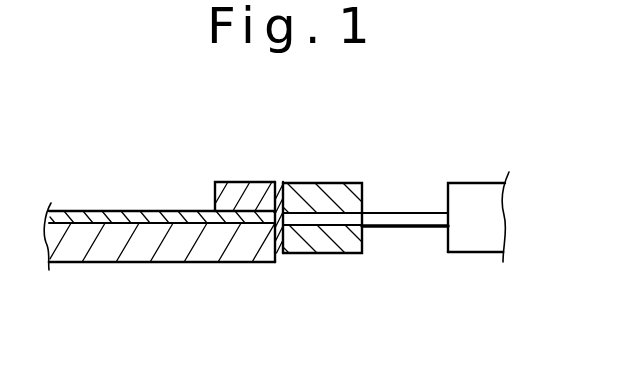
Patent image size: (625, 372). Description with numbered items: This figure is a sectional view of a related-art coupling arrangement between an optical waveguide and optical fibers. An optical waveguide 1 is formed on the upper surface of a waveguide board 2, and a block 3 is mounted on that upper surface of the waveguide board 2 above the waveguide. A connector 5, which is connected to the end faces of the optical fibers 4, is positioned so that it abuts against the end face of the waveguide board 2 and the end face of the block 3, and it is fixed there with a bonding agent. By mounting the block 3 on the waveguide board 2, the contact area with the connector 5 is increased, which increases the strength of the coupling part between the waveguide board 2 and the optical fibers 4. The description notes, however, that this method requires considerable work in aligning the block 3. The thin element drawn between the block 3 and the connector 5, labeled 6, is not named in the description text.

The optical waveguide 1 is at (112, 211).
The waveguide board 2 is at (140, 262).
The block 3 is at (231, 182).
The optical fibers 4 is at (409, 205).
The connector 5 is at (326, 183).
The spacer plate 6 is at (279, 182).